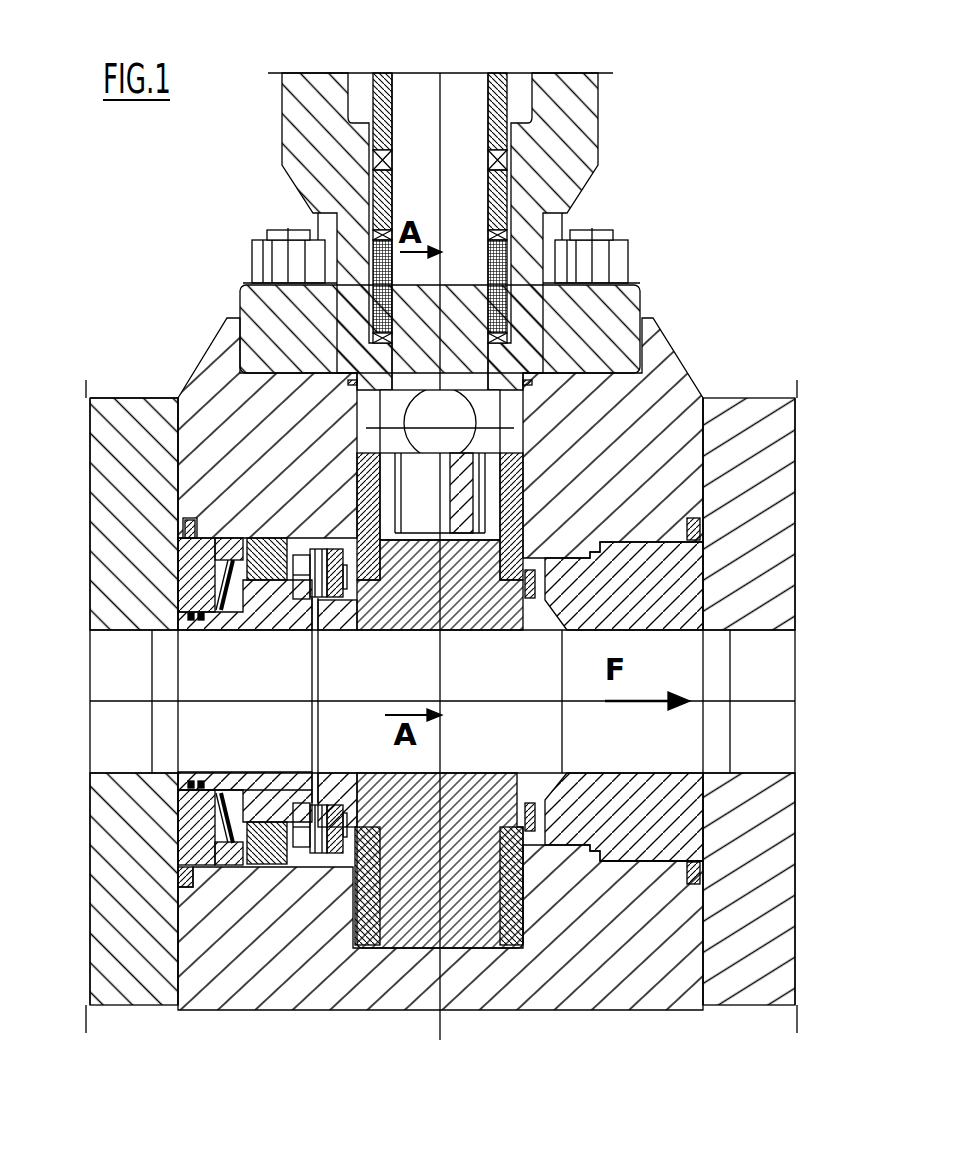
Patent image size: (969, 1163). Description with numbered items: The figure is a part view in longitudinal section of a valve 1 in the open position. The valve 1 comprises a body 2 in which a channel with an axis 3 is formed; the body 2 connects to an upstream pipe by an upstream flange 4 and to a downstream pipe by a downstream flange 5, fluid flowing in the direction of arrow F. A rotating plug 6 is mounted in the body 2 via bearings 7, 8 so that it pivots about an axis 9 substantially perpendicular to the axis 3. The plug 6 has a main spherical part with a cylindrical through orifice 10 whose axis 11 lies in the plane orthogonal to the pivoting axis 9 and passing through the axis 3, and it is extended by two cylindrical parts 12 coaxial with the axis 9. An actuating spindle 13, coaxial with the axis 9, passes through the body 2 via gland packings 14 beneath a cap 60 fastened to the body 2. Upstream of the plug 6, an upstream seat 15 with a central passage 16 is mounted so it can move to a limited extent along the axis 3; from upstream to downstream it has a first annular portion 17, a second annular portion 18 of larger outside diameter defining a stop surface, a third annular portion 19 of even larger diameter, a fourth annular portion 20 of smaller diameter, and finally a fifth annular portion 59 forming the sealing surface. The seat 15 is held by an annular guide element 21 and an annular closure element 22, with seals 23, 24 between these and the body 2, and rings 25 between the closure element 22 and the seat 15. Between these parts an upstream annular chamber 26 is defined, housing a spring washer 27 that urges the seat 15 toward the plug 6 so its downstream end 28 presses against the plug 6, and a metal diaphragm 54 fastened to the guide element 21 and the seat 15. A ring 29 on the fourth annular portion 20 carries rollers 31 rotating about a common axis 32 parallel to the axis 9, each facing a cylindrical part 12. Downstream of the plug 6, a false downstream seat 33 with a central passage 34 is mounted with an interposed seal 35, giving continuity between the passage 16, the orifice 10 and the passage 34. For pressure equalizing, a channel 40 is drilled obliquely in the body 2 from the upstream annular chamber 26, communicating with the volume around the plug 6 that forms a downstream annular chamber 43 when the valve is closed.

The valve 1 is at (662, 102).
The body 2 is at (657, 368).
The axis 3 is at (750, 702).
The axis 11 is at (750, 702).
The upstream flange 4 is at (105, 983).
The downstream flange 5 is at (777, 450).
The rotating plug 6 is at (545, 780).
The bearing 7 is at (440, 480).
The bearing 8 is at (520, 948).
The pivoting axis 9 is at (440, 1017).
The cylindrical through orifice 10 is at (475, 751).
The cylindrical parts 12 is at (528, 577).
The actuating spindle 13 is at (452, 110).
The gland packings 14 is at (503, 255).
The upstream seat 15 is at (200, 636).
The central passage 16 is at (238, 751).
The first annular portion 17 is at (192, 778).
The second annular portion 18 is at (230, 612).
The third annular portion 19 is at (275, 605).
The fourth annular portion 20 is at (313, 603).
The annular guide element 21 is at (255, 862).
The annular closure element 22 is at (230, 843).
The seal 23 is at (265, 865).
The seal 24 is at (180, 880).
The rings 25 is at (190, 787).
The upstream annular chamber 26 is at (230, 875).
The spring washer 27 is at (240, 580).
The downstream end 28 is at (330, 800).
The ring 29 is at (300, 850).
The roller 31 is at (330, 540).
The common axis 32 is at (345, 842).
The false downstream seat 33 is at (680, 808).
The central passage 34 is at (625, 751).
The seal 35 is at (700, 878).
The channel 40 is at (297, 555).
The downstream annular chamber 43 is at (350, 565).
The metal diaphragm 54 is at (240, 592).
The fifth annular portion 59 is at (332, 602).
The cap 60 is at (612, 312).